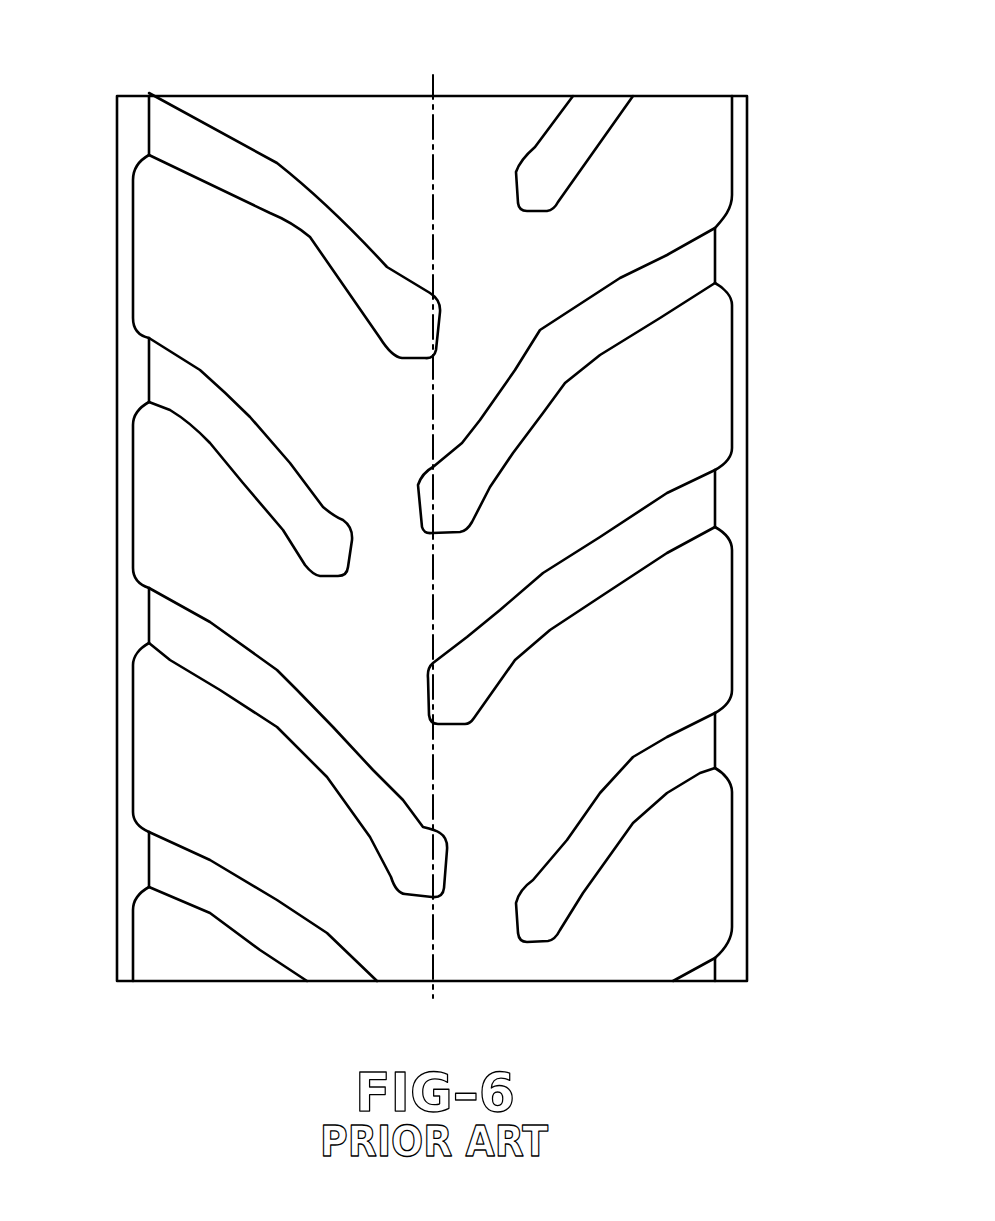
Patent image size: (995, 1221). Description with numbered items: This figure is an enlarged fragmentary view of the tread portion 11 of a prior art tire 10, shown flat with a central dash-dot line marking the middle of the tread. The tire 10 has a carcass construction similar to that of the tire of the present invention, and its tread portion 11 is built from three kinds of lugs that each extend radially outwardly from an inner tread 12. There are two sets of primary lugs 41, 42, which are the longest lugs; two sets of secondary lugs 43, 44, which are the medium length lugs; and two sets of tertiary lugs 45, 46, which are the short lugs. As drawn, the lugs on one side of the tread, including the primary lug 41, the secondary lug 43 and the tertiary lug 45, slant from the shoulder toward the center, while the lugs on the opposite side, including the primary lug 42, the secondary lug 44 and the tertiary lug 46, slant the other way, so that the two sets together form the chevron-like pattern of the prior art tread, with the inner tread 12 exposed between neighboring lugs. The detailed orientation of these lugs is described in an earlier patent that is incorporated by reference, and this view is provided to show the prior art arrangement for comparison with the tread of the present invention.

The tire 10 is at (790, 137).
The tread portion 11 is at (191, 750).
The inner tread 12 is at (175, 272).
The primary lug 41 is at (185, 638).
The primary lug 42 is at (693, 270).
The secondary lug 43 is at (173, 145).
The secondary lug 44 is at (688, 510).
The tertiary lug 45 is at (183, 402).
The tertiary lug 46 is at (693, 757).